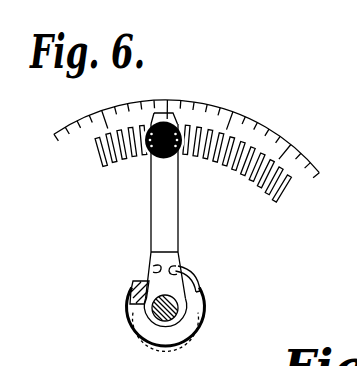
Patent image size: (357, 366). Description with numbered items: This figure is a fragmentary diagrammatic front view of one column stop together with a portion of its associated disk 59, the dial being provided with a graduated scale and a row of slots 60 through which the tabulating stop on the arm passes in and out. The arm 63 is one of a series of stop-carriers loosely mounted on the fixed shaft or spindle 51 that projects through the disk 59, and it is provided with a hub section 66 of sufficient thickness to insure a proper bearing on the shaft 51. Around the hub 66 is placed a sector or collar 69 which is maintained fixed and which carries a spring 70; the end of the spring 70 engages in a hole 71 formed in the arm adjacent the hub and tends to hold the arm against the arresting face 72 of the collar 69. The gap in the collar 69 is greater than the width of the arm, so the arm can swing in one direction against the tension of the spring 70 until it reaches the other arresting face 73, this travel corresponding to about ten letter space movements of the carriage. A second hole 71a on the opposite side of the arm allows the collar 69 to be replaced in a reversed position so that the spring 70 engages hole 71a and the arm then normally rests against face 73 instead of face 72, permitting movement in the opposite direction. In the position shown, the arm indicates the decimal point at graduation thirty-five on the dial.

The disk 59 is at (269, 131).
The slots 60 is at (248, 194).
The arm 63 is at (166, 200).
The hub section 66 is at (175, 322).
The hole 71a is at (152, 268).
The hole 71 is at (177, 268).
The spring 70 is at (193, 275).
The arresting face 73 is at (195, 280).
The arresting face 72 is at (151, 274).
The collar 69 is at (195, 312).
The shaft 51 is at (153, 313).